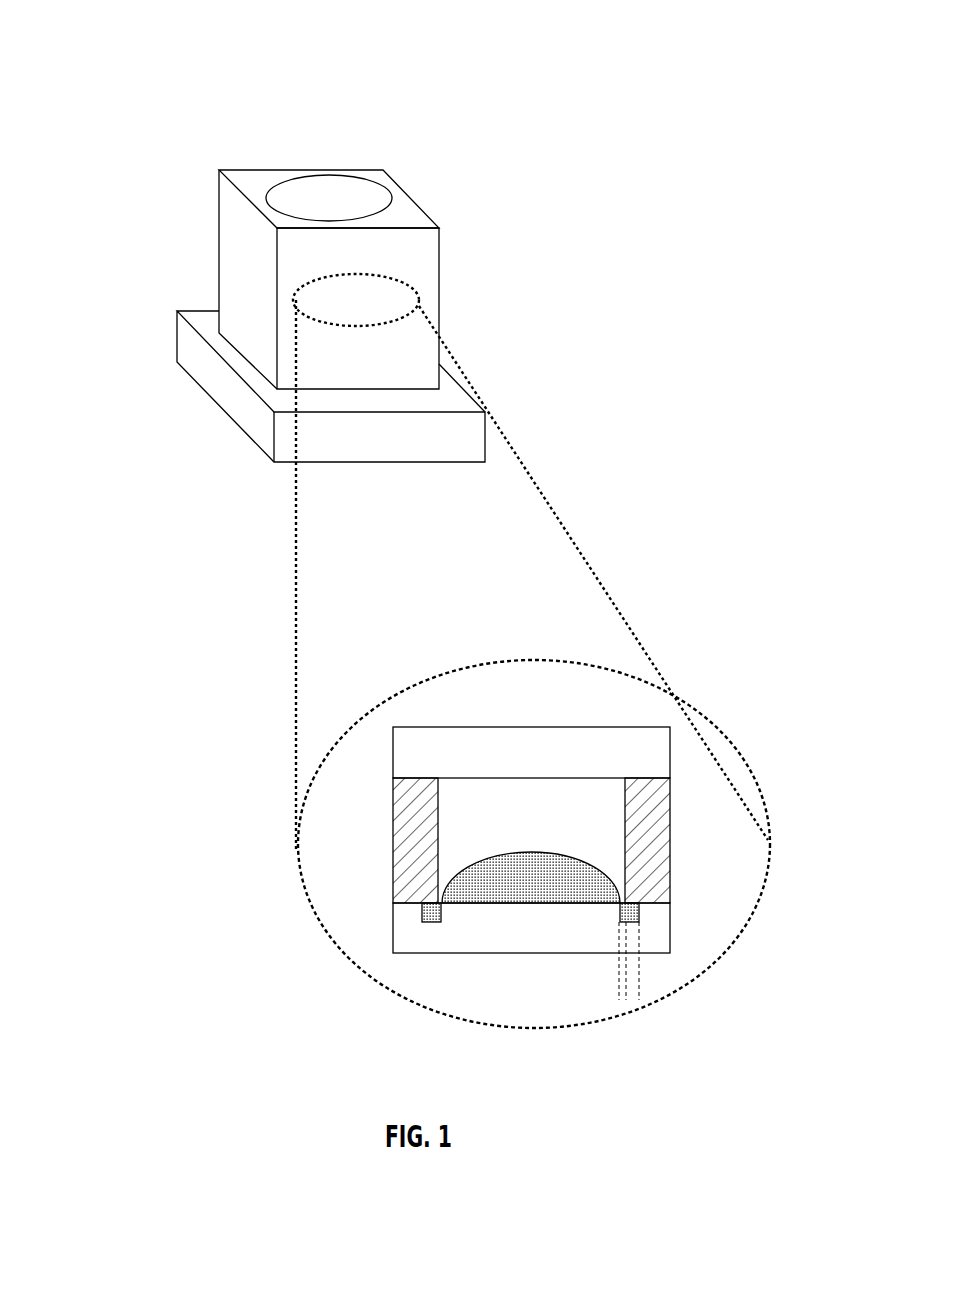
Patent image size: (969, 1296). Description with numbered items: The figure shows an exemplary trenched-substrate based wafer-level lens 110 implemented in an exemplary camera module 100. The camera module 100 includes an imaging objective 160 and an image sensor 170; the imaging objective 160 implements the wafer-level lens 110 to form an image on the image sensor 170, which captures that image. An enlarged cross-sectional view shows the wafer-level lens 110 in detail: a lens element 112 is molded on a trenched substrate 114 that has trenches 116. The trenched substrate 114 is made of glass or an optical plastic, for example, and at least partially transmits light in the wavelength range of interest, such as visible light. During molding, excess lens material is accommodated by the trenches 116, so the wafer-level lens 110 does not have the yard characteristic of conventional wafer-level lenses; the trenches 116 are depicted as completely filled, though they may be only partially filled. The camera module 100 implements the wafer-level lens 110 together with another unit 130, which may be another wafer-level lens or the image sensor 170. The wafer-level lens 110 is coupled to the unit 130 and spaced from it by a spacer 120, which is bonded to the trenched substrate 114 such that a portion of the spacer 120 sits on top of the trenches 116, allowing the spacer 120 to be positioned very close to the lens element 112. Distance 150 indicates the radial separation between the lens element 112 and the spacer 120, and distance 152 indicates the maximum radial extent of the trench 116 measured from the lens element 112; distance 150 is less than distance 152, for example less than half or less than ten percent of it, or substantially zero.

The camera module 100 is at (331, 239).
The imaging objective 160 is at (439, 269).
The image sensor 170 is at (293, 391).
The wafer-level lens 110 is at (491, 817).
The unit 130 is at (418, 727).
The spacer 120 is at (670, 828).
The lens element 112 is at (562, 855).
The trenched substrate 114 is at (670, 953).
The trenches 116 is at (435, 922).
The distance 150 is at (667, 992).
The distance 152 is at (667, 977).